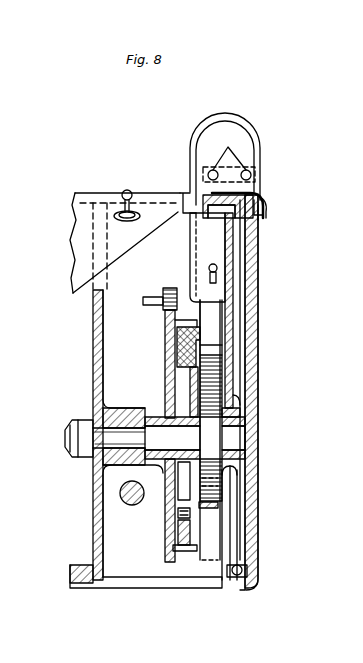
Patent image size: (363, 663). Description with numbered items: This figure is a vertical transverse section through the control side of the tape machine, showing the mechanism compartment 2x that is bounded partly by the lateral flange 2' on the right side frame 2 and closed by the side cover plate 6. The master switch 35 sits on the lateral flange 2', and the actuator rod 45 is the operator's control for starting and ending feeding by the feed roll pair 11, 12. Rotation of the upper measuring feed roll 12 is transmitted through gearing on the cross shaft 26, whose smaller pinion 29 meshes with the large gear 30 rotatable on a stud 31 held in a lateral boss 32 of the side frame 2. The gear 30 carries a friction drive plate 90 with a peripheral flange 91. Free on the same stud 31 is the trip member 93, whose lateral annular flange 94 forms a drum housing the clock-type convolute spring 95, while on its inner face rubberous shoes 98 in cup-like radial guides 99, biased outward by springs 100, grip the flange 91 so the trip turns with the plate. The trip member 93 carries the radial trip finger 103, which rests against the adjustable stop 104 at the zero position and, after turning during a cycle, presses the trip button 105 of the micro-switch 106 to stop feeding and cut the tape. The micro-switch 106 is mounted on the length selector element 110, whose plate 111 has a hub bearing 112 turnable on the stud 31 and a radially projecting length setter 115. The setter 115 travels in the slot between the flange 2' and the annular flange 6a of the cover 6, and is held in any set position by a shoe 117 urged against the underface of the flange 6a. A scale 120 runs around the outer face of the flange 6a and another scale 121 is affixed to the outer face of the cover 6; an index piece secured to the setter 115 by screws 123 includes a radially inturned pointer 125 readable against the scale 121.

The right side frame 2 is at (142, 439).
The lateral flange 2' is at (125, 230).
The mechanism compartment 2x is at (95, 535).
The side cover plate 6 is at (258, 312).
The annular flange 6a is at (286, 220).
The lower feed roll 11 is at (180, 213).
The upper feed roll 12 is at (222, 360).
The cross shaft 26 is at (143, 300).
The pinion 29 is at (159, 292).
The large gear 30 is at (170, 322).
The stud 31 is at (96, 455).
The lateral boss 32 is at (128, 398).
The master switch 35 is at (127, 188).
The actuator rod 45 is at (120, 493).
The friction drive plate 90 is at (178, 530).
The peripheral flange 91 is at (173, 548).
The trip member 93 is at (190, 482).
The lateral annular flange 94 is at (214, 353).
The convolute spring 95 is at (222, 380).
The rubberous shoe 98 is at (205, 333).
The radial guide 99 is at (178, 352).
The springs 100 is at (185, 350).
The trip finger 103 is at (208, 525).
The adjustable stop 104 is at (200, 565).
The trip button 105 is at (208, 280).
The micro-switch 106 is at (200, 243).
The length selector element 110 is at (268, 157).
The selector plate 111 is at (233, 255).
The hub bearing 112 is at (240, 405).
The length setter 115 is at (255, 118).
The shoe 117 is at (208, 211).
The scale 120 is at (262, 196).
The scale 121 is at (262, 217).
The screws 123 is at (229, 153).
The pointer 125 is at (268, 204).